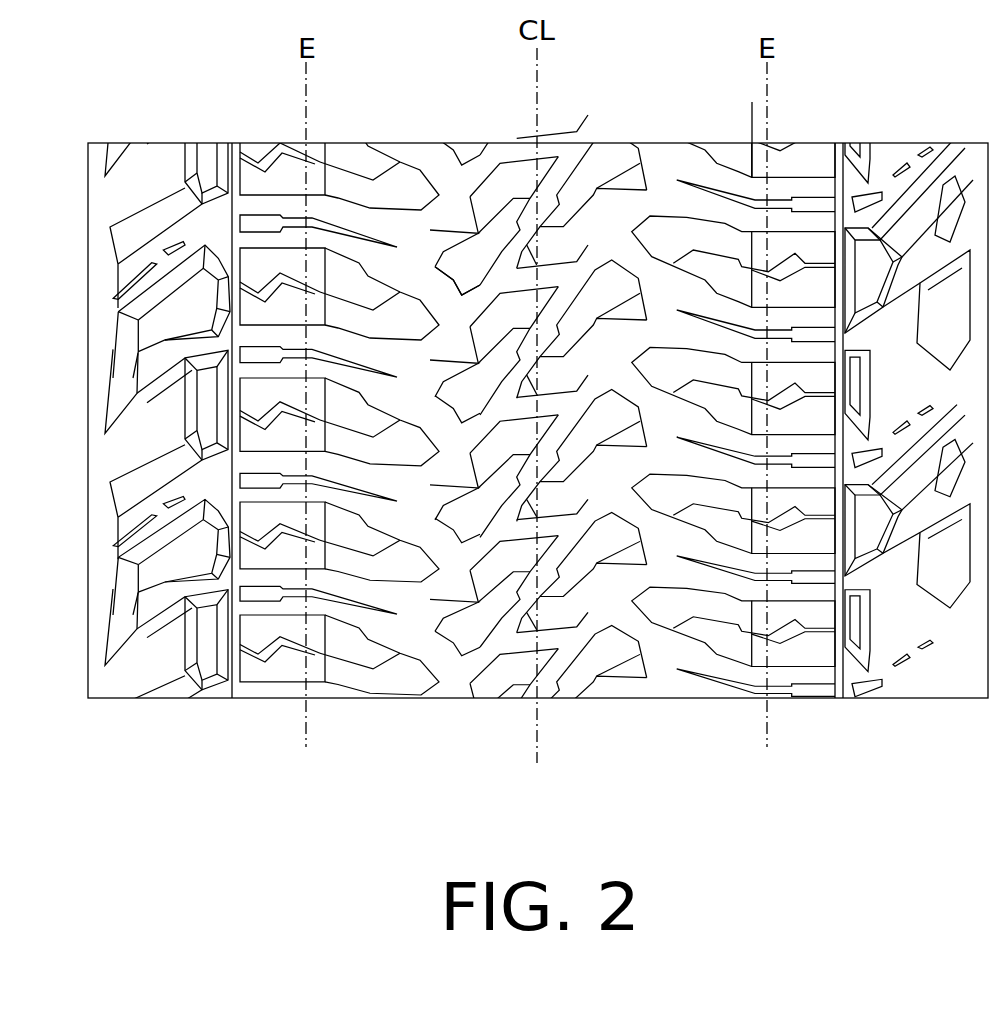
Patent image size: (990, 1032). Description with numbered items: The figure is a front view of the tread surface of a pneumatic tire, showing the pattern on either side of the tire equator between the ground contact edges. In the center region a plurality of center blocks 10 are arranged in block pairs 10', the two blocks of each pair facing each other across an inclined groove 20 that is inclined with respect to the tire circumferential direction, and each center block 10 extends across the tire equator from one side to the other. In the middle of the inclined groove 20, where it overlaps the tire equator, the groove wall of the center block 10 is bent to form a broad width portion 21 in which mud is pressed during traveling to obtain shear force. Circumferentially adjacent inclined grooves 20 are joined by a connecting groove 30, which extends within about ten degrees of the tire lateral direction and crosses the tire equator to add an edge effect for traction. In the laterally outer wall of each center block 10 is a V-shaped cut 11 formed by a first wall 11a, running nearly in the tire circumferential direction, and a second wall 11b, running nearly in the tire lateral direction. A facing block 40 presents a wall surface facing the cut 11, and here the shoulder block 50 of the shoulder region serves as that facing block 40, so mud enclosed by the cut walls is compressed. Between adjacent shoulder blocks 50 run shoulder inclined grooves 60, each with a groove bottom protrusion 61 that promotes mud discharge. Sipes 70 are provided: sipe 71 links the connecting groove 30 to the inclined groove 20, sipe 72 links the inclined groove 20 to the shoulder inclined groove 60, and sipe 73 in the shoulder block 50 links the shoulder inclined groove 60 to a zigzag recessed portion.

The center block 10 is at (588, 121).
The block pair 10' is at (621, 40).
The cut 11 is at (605, 195).
The first wall 11a is at (463, 240).
The second wall 11b is at (405, 178).
The inclined groove 20 is at (557, 665).
The broad width portion 21 is at (548, 665).
The connecting groove 30 is at (538, 655).
The facing block 40 is at (733, 407).
The shoulder block 50 is at (745, 648).
The shoulder inclined groove 60 is at (738, 180).
The groove bottom protrusion 61 is at (780, 195).
The sipe 70 is at (339, 406).
The sipe 71 is at (528, 640).
The sipe 72 is at (456, 628).
The sipe 73 is at (355, 662).